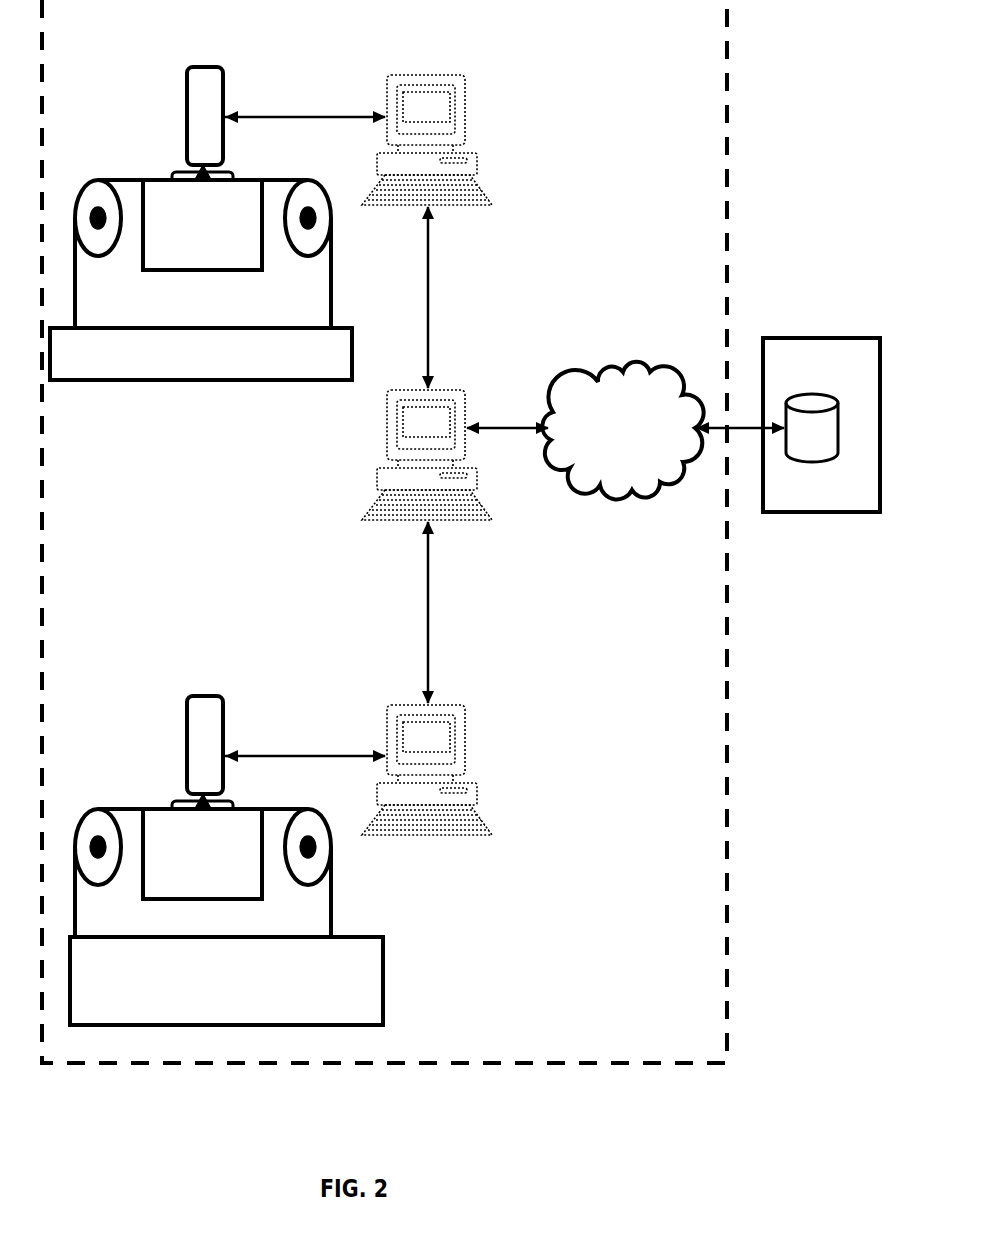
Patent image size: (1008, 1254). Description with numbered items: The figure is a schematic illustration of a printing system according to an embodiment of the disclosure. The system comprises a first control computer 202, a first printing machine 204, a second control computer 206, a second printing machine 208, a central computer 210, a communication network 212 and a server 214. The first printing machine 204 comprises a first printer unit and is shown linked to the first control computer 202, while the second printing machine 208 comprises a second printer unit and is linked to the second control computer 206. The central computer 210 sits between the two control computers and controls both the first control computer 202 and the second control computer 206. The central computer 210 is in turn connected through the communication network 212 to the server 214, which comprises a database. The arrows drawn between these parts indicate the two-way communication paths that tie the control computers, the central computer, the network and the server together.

The first control computer 202 is at (467, 97).
The first printing machine 204 is at (205, 272).
The second control computer 206 is at (427, 838).
The second printing machine 208 is at (192, 899).
The central computer 210 is at (387, 422).
The communication network 212 is at (647, 365).
The server 214 is at (823, 338).